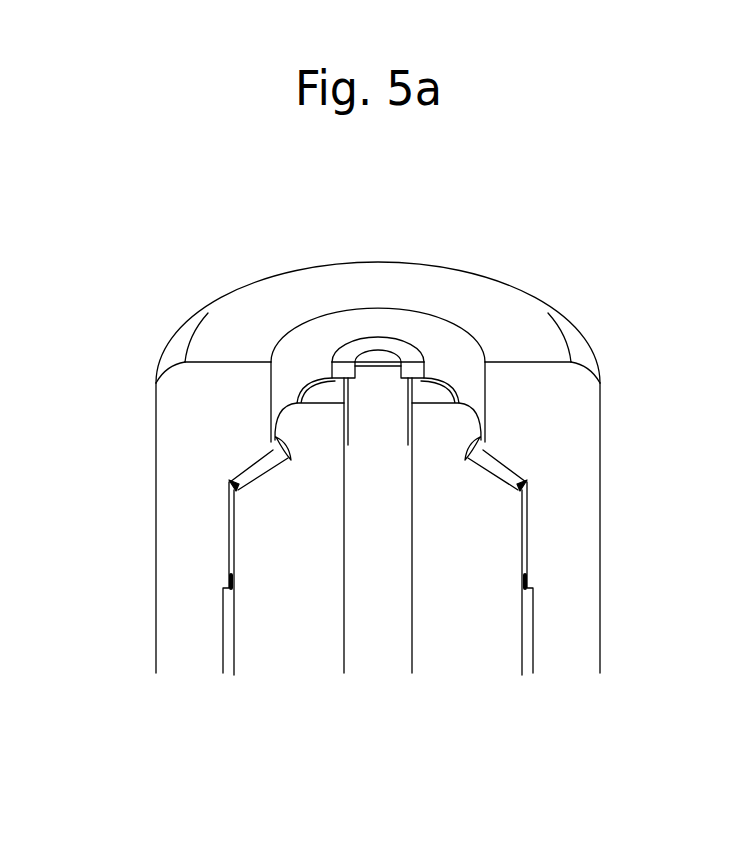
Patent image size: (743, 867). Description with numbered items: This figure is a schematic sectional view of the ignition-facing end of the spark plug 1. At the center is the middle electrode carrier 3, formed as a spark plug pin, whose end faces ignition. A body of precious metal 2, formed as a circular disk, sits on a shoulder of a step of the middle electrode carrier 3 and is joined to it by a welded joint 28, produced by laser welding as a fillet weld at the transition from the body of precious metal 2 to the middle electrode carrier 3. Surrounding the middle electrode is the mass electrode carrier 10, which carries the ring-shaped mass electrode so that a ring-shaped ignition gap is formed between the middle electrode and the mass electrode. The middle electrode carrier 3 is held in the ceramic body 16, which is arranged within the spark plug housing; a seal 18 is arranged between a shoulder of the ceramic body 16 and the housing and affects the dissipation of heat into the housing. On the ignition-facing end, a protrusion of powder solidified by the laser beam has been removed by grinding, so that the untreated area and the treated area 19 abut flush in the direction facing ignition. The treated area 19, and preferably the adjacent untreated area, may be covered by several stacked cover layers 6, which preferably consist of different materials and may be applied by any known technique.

The spark plug 1 is at (514, 190).
The body of precious metal 2 is at (343, 353).
The welded joint 28 is at (367, 352).
The cover layers 6 is at (385, 362).
The treated area 19 is at (393, 355).
The middle electrode carrier 3 is at (388, 422).
The mass electrode carrier 10 is at (571, 422).
The ceramic body 16 is at (477, 565).
The seal 18 is at (508, 470).